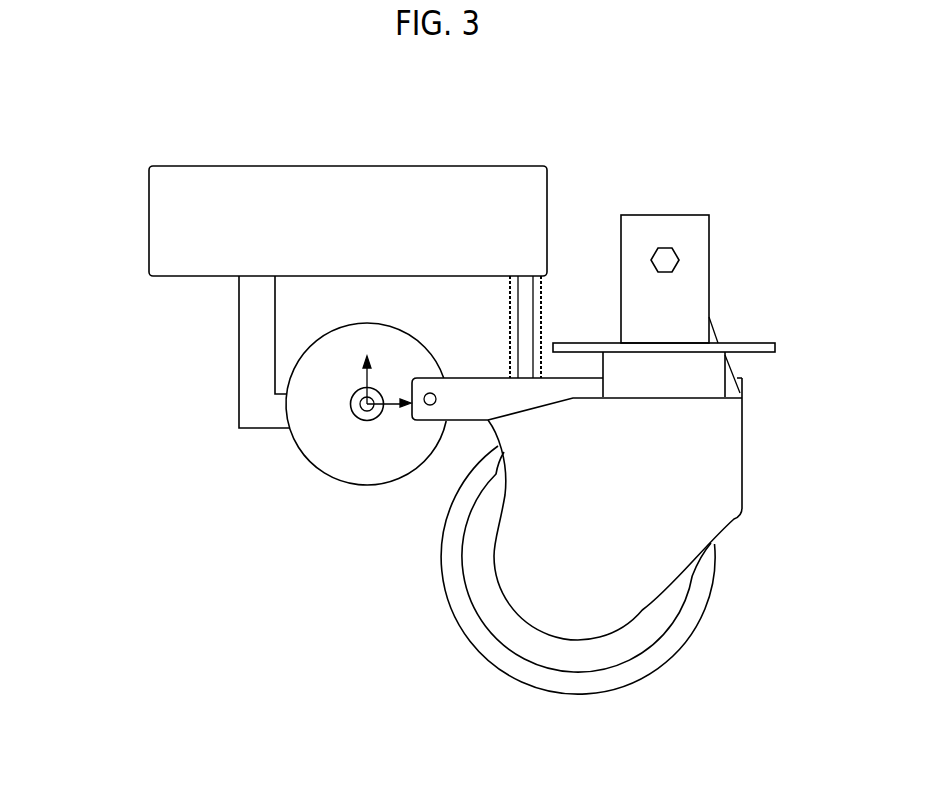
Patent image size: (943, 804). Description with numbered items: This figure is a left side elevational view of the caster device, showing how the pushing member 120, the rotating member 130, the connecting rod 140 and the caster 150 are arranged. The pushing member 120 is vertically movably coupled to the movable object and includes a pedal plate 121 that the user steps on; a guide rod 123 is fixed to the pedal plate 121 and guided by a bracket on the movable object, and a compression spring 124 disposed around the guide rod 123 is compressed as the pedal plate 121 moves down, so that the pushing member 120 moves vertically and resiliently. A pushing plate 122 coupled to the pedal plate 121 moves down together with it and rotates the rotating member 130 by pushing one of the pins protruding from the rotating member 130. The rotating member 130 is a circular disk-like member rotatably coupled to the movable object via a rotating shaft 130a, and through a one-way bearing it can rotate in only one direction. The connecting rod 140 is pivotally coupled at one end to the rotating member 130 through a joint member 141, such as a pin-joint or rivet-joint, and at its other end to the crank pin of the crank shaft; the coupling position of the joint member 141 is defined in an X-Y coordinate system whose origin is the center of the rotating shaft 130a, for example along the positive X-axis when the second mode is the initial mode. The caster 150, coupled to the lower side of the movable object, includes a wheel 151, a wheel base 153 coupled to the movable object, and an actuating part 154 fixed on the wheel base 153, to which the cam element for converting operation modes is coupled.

The pushing member 120 is at (82, 342).
The pedal plate 121 is at (158, 220).
The pushing plate 122 is at (237, 335).
The guide rod 123 is at (517, 310).
The compression spring 124 is at (540, 283).
The rotating member 130 is at (338, 458).
The rotating shaft 130a is at (353, 402).
The connecting rod 140 is at (468, 405).
The joint member 141 is at (412, 408).
The caster 150 is at (765, 457).
The wheel 151 is at (700, 593).
The wheel base 153 is at (747, 345).
The actuating part 154 is at (702, 230).